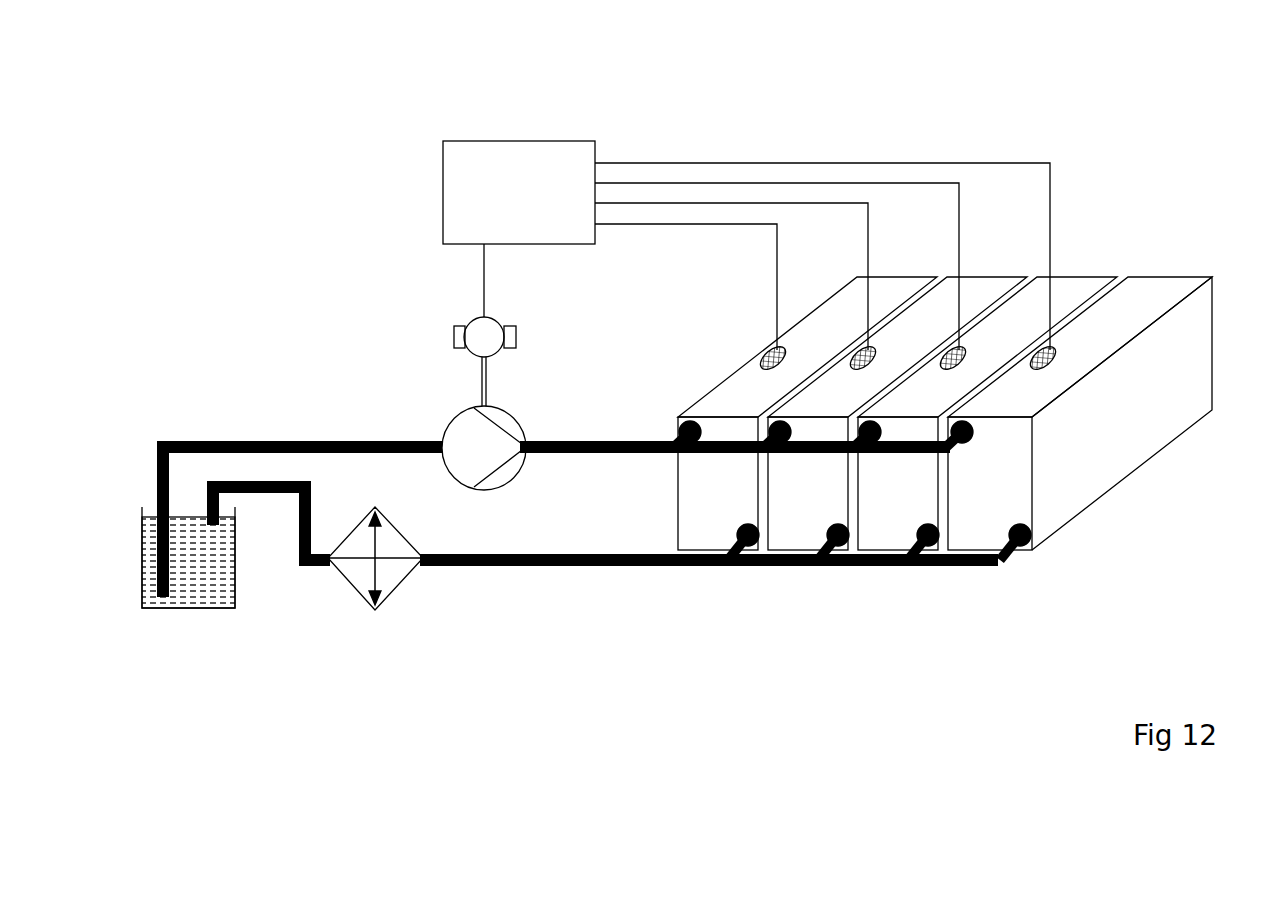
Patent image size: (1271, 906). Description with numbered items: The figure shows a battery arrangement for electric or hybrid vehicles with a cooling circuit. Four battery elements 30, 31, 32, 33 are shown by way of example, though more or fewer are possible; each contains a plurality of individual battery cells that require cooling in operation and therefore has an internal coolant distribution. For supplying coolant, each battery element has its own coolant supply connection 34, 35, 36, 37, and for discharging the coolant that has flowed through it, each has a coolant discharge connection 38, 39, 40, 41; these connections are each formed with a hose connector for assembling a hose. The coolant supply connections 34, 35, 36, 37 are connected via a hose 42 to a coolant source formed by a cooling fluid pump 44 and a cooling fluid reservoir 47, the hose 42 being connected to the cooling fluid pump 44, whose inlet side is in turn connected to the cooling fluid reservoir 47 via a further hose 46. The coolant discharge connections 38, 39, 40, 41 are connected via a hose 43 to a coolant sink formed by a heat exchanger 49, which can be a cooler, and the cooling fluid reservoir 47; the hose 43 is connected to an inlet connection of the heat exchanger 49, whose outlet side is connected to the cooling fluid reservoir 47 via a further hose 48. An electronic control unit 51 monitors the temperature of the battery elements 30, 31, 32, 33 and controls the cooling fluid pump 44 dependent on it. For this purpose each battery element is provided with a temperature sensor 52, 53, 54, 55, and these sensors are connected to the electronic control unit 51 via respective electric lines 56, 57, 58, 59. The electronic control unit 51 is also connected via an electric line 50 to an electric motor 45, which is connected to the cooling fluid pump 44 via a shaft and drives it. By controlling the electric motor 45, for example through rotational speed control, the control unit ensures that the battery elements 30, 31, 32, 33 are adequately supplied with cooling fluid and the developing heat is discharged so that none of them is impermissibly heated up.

The battery element 30 is at (888, 282).
The battery element 31 is at (976, 282).
The battery element 32 is at (1073, 282).
The battery element 33 is at (1161, 282).
The coolant supply connection 34 is at (700, 426).
The coolant supply connection 35 is at (790, 426).
The coolant supply connection 36 is at (880, 426).
The coolant supply connection 37 is at (970, 426).
The coolant discharge connection 38 is at (738, 530).
The coolant discharge connection 39 is at (828, 530).
The coolant discharge connection 40 is at (918, 530).
The coolant discharge connection 41 is at (1010, 530).
The hose 42 is at (623, 455).
The hose 43 is at (612, 567).
The cooling fluid pump 44 is at (508, 416).
The electric motor 45 is at (453, 337).
The hose 46 is at (268, 441).
The cooling fluid reservoir 47 is at (200, 610).
The hose 48 is at (297, 548).
The heat exchanger 49 is at (392, 603).
The electric line 50 is at (484, 280).
The electronic control unit 51 is at (515, 141).
The temperature sensor 52 is at (762, 352).
The temperature sensor 53 is at (852, 352).
The temperature sensor 54 is at (944, 354).
The temperature sensor 55 is at (1034, 356).
The electric line 56 is at (777, 232).
The electric line 57 is at (868, 222).
The electric line 58 is at (959, 220).
The electric line 59 is at (1050, 214).